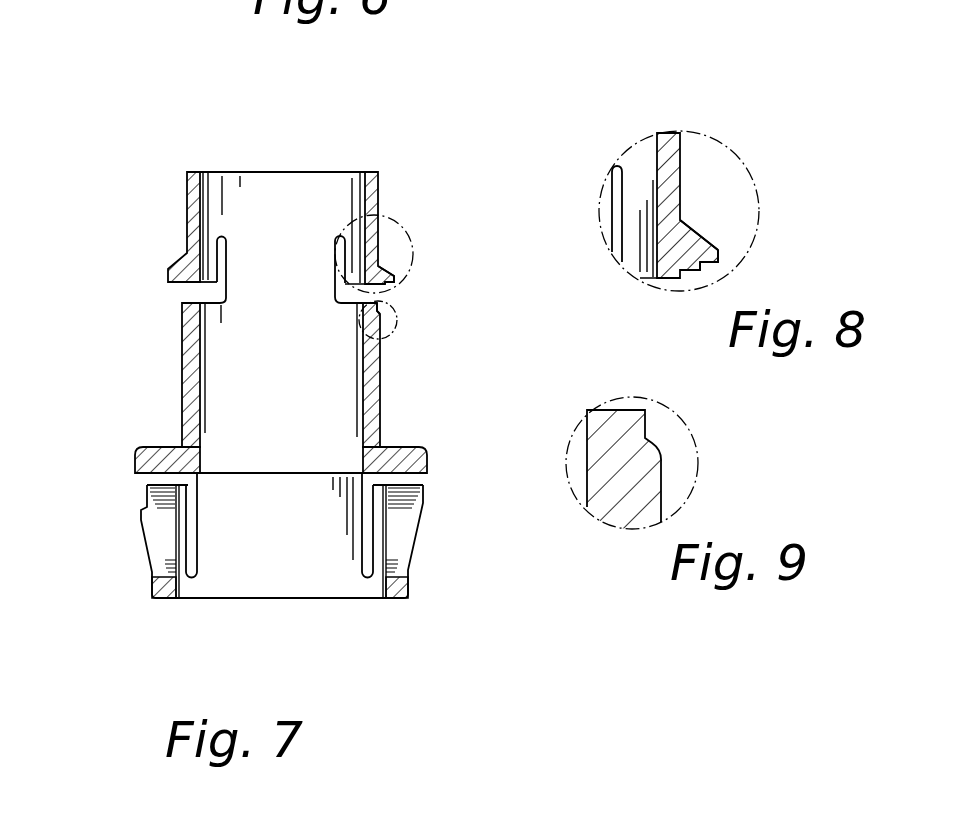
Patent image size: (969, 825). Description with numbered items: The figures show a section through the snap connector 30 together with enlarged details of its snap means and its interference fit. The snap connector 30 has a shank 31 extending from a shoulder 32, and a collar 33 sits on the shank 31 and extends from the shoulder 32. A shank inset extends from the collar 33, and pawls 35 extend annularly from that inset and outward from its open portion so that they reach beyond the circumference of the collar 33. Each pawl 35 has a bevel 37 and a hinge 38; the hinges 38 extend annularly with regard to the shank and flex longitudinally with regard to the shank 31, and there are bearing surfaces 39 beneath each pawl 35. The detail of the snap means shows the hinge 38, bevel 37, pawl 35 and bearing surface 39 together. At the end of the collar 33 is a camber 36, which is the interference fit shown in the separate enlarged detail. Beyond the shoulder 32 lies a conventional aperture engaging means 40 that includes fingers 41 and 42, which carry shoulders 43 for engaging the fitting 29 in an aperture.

In FIG. 7, the fitting 29 is at (283, 298).
In FIG. 7, the snap connector 30 is at (163, 412).
In FIG. 7, the shank 31 is at (170, 348).
In FIG. 7, the shoulder 32 is at (410, 447).
In FIG. 7, the collar 33 is at (383, 392).
In FIG. 7, the pawls 35 is at (383, 281).
In FIG. 8, the pawls 35 is at (723, 253).
In FIG. 7, the camber 36 is at (395, 318).
In FIG. 9, the camber 36 is at (653, 442).
In FIG. 7, the bevels 37 is at (383, 271).
In FIG. 8, the bevels 37 is at (698, 232).
In FIG. 7, the hinges 38 is at (377, 193).
In FIG. 8, the hinges 38 is at (680, 158).
In FIG. 7, the bearing surfaces 39 is at (372, 292).
In FIG. 8, the bearing surfaces 39 is at (698, 272).
In FIG. 7, the aperture engaging means 40 is at (267, 589).
In FIG. 7, the finger 41 is at (412, 562).
In FIG. 7, the finger 42 is at (142, 563).
In FIG. 7, the shoulders 43 is at (425, 487).